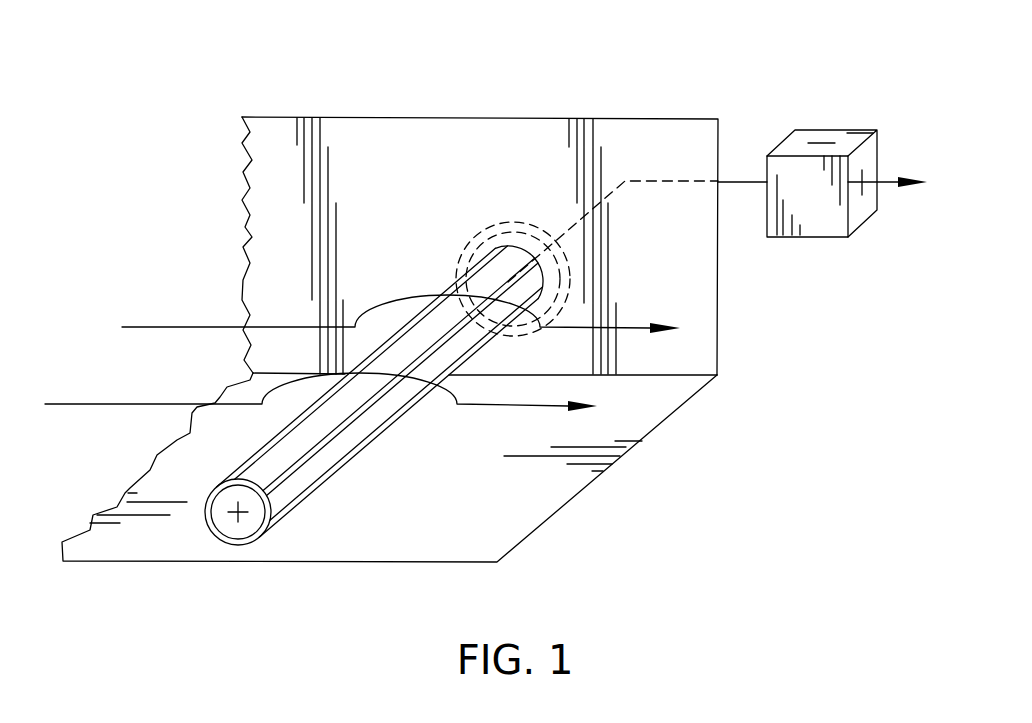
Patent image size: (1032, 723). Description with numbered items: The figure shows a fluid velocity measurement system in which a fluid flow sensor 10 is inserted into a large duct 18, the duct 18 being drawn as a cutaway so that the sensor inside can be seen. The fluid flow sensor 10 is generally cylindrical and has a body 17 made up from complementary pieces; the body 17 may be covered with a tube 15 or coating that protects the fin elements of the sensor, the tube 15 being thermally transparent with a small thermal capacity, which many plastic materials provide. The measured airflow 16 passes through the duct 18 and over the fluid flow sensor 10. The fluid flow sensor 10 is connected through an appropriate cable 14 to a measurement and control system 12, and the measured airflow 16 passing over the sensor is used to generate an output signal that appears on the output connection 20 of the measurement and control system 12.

The fluid flow sensor 10 is at (348, 510).
The measurement and control system 12 is at (822, 140).
The cable 14 is at (737, 182).
The tube 15 is at (392, 387).
The measured airflow 16 is at (132, 404).
The body 17 is at (227, 520).
The duct 18 is at (427, 143).
The output connection 20 is at (868, 185).